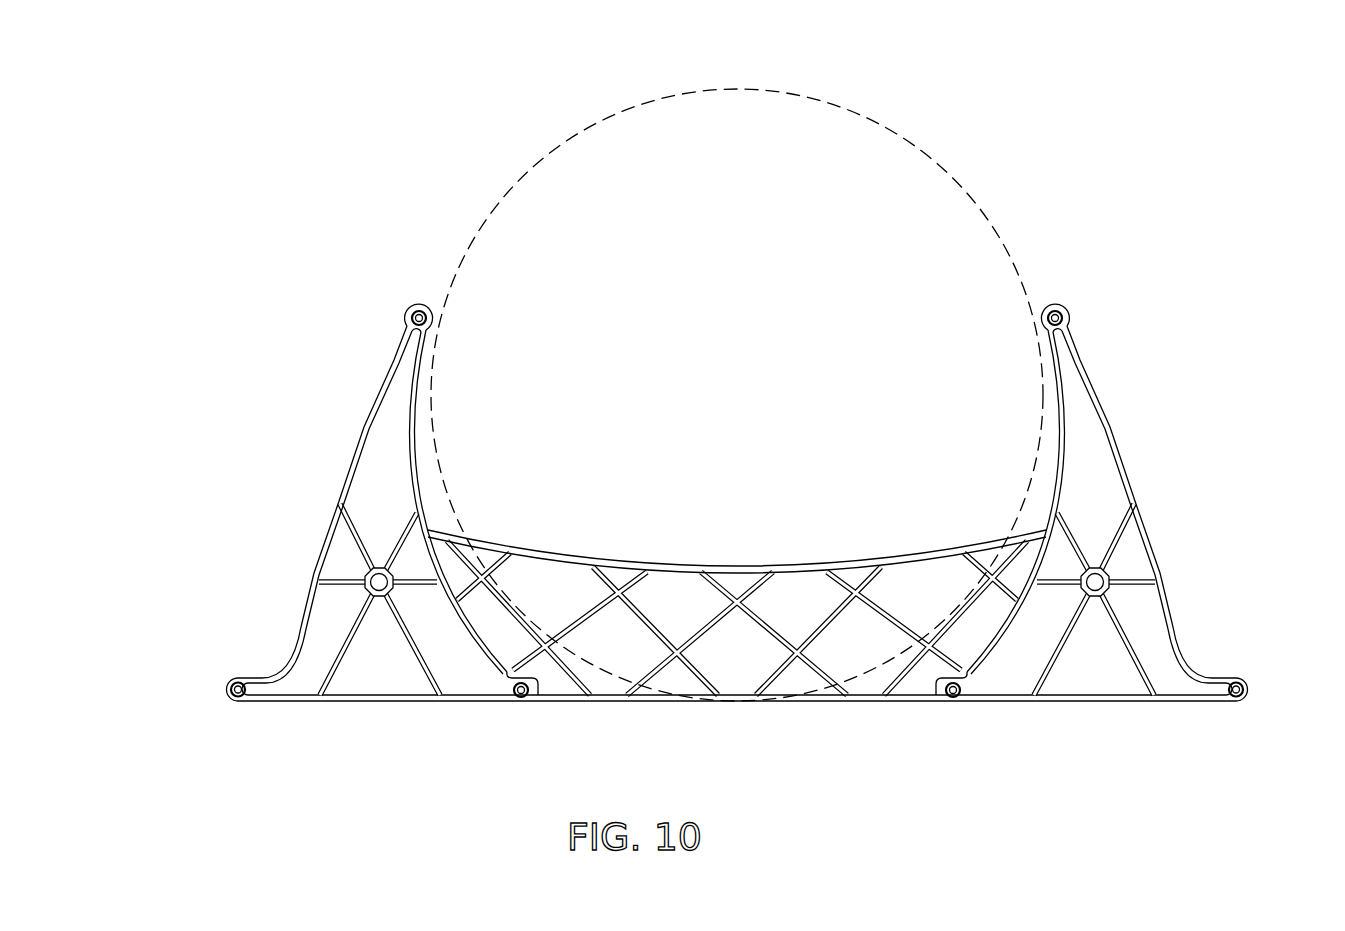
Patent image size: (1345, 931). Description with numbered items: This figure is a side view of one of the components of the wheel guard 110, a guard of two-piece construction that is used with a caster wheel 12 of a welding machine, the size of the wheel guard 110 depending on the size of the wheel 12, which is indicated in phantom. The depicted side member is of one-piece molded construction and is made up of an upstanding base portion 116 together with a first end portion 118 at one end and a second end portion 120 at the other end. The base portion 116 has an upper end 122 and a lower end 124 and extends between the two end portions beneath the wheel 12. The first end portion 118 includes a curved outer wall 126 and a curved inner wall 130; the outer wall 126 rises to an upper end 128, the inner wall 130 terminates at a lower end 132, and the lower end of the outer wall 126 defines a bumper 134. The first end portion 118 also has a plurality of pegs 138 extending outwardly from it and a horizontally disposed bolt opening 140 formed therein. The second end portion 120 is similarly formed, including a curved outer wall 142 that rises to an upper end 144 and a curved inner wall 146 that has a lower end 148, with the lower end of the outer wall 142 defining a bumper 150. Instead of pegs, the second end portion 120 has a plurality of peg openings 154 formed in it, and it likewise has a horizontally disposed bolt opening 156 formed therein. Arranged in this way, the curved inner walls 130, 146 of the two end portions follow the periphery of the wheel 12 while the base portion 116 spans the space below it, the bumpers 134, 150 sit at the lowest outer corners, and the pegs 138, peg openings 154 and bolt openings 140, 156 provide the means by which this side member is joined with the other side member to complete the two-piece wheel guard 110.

The caster wheel 12 is at (1036, 230).
The wheel guard 110 is at (370, 503).
The base portion 116 is at (803, 537).
The first end portion 118 is at (330, 415).
The second end portion 120 is at (1121, 539).
The upper end 122 is at (680, 566).
The lower end 124 is at (603, 703).
The curved outer wall 126 is at (340, 507).
The upper end 128 is at (421, 306).
The curved inner wall 130 is at (416, 468).
The lower end 132 is at (546, 703).
The bumper 134 is at (240, 680).
The pegs 138 is at (407, 317).
The bolt opening 140 is at (362, 570).
The curved outer wall 142 is at (1130, 472).
The upper end 144 is at (1057, 303).
The curved inner wall 146 is at (1063, 443).
The lower end 148 is at (972, 693).
The bumper 150 is at (1248, 692).
The peg openings 154 is at (1238, 678).
The bolt opening 156 is at (1110, 573).